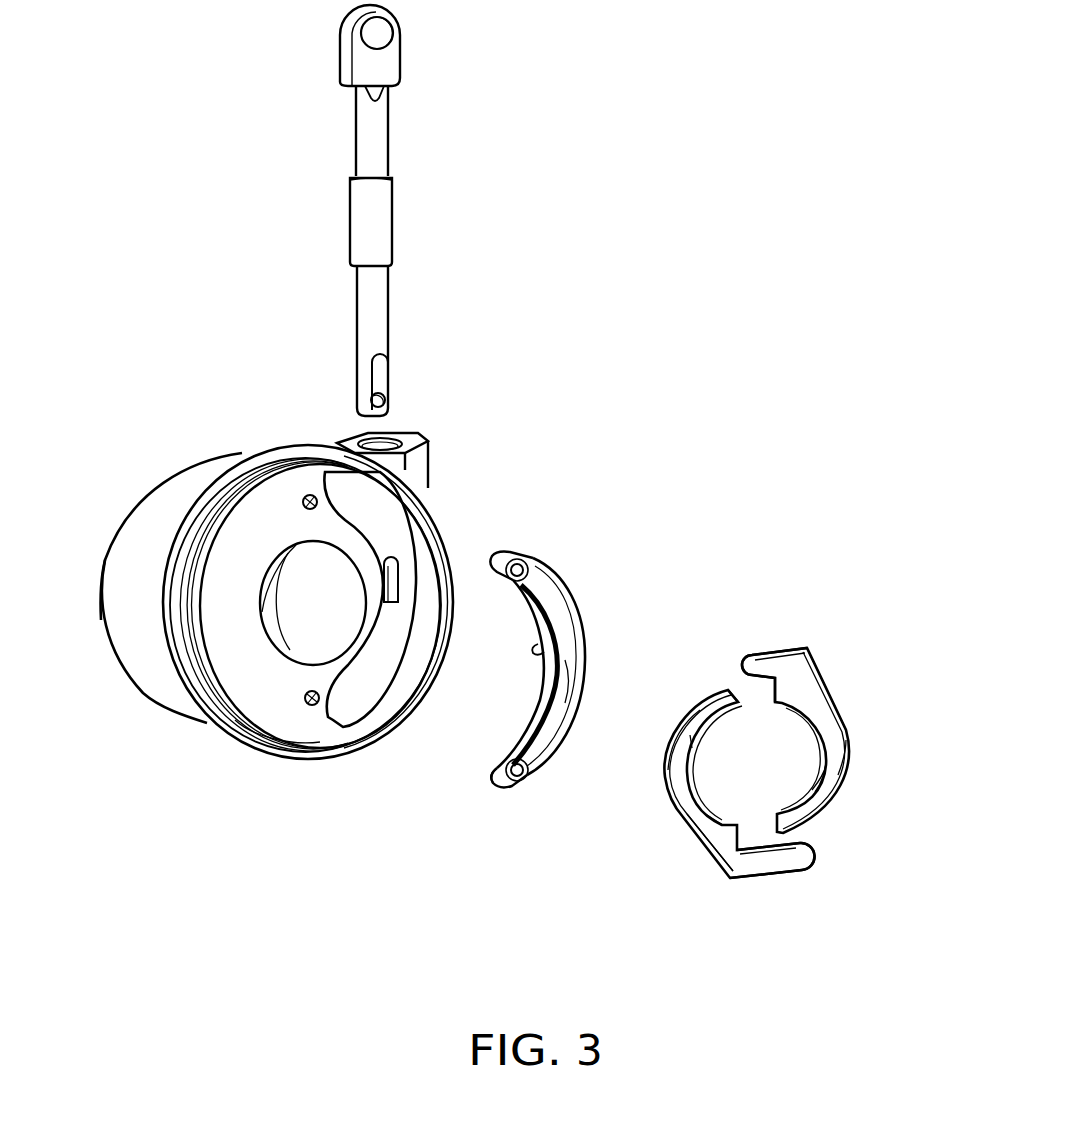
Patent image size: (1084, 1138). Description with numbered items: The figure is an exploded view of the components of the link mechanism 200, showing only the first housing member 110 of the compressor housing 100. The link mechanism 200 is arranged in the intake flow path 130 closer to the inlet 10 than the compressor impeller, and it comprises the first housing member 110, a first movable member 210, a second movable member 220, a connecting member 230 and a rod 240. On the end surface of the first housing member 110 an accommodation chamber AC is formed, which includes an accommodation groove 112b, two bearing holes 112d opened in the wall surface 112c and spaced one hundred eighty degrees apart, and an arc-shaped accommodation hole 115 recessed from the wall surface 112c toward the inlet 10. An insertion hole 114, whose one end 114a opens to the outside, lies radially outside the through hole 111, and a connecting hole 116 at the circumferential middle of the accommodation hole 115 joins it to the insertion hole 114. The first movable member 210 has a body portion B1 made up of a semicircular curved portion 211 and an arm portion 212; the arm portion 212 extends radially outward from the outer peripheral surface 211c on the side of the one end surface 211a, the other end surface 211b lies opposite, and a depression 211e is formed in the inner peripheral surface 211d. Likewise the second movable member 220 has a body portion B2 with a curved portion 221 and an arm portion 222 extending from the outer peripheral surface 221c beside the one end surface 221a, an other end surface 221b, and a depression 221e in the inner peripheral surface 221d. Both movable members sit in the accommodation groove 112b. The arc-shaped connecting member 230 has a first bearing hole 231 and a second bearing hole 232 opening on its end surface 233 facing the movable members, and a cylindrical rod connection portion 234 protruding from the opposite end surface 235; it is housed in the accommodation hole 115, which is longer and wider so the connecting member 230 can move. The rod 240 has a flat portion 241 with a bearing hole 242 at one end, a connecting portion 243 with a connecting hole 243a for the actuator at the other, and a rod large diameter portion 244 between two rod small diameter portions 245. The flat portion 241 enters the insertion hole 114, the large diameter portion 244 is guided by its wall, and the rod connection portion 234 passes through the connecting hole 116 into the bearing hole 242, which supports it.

The link mechanism 200 is at (85, 106).
The inlet 10 is at (98, 560).
The compressor housing 100 is at (133, 530).
The first housing member 110 is at (175, 492).
The through hole 111 is at (338, 593).
The accommodation groove 112b is at (268, 670).
The wall surface 112c is at (262, 690).
The bearing holes 112d is at (303, 496).
The insertion hole 114 is at (368, 440).
The one end of insertion hole 114a is at (378, 440).
The accommodation hole 115 is at (378, 515).
The connecting hole 116 is at (400, 570).
The intake flow path 130 is at (332, 633).
The accommodation chamber AC is at (250, 627).
The first movable member 210 is at (840, 680).
The curved portion 211 is at (842, 720).
The one end surface 211a is at (812, 662).
The other end surface 211b is at (818, 785).
The outer peripheral surface 211c is at (850, 750).
The inner peripheral surface 211d is at (827, 773).
The depression 211e is at (790, 812).
The arm portion 212 is at (770, 650).
The second movable member 220 is at (700, 848).
The curved portion 221 is at (665, 770).
The one end surface 221a is at (745, 860).
The other end surface 221b is at (730, 694).
The outer peripheral surface 221c is at (670, 740).
The inner peripheral surface 221d is at (703, 746).
The depression 221e is at (715, 800).
The arm portion 222 is at (775, 872).
The connecting member 230 is at (586, 650).
The first bearing hole 231 is at (525, 568).
The second bearing hole 232 is at (510, 780).
The end surface 233 is at (500, 780).
The rod connection portion 234 is at (535, 655).
The end surface 235 is at (567, 703).
The rod 240 is at (388, 126).
The flat portion 241 is at (380, 378).
The bearing hole 242 is at (384, 404).
The connecting portion 243 is at (382, 66).
The connecting hole 243a is at (386, 30).
The rod large diameter portion 244 is at (388, 228).
The rod small diameter portions 245 is at (388, 158).
The body portion B1 is at (800, 828).
The body portion B2 is at (806, 868).